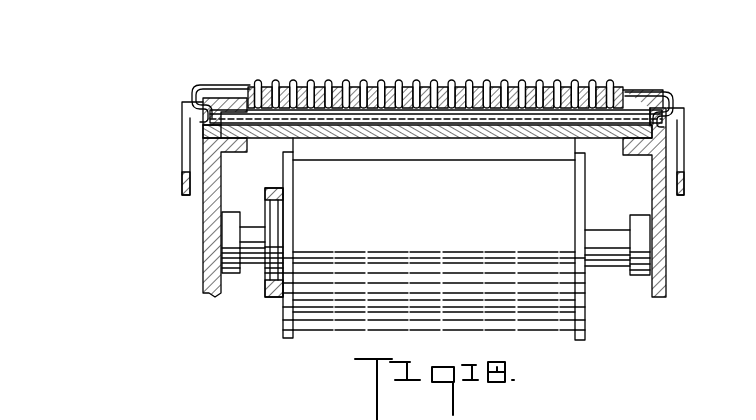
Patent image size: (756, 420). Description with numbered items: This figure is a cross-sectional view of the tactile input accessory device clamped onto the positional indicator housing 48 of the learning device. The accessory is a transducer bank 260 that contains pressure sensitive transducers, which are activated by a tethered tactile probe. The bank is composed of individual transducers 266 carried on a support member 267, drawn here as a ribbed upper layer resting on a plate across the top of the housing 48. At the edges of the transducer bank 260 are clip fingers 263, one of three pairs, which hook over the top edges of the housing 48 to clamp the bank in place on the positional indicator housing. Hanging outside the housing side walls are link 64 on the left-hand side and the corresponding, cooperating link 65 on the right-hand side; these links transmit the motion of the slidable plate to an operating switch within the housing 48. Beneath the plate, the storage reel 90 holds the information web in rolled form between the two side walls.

The positional indicator housing 48 is at (210, 250).
The transducer bank 260 is at (317, 73).
The clip fingers 263 is at (213, 84).
The individual transducers 266 is at (451, 82).
The support member 267 is at (410, 82).
The link 64 is at (182, 157).
The link 65 is at (684, 152).
The storage reel 90 is at (578, 314).